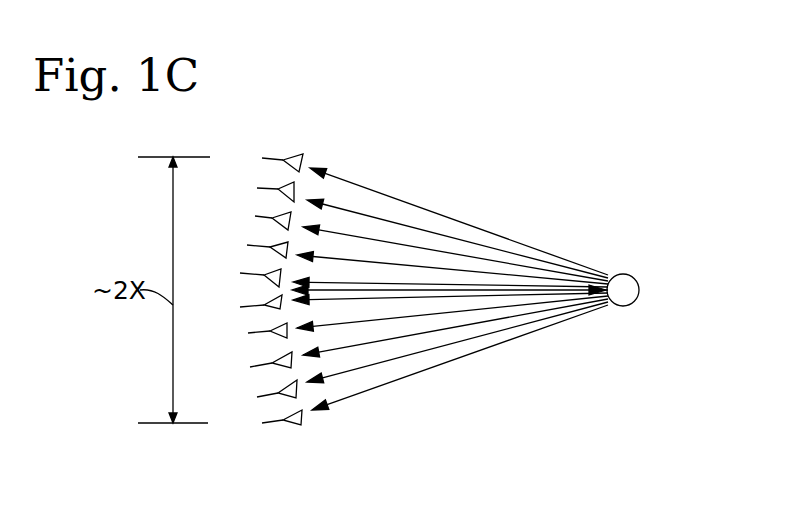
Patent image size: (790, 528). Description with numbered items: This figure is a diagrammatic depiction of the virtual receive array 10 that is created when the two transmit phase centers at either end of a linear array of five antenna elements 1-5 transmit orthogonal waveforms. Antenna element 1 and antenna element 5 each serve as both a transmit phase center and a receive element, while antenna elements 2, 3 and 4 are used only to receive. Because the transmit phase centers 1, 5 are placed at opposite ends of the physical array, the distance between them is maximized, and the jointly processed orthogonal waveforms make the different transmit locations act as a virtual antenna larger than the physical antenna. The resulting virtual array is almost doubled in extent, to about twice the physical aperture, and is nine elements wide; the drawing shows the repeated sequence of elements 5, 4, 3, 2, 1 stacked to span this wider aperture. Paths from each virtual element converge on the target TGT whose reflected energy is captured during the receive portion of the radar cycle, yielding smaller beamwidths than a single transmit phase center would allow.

The antenna element 1 is at (243, 273).
The antenna element 2 is at (248, 246).
The antenna element 3 is at (256, 216).
The antenna element 4 is at (257, 188).
The antenna element 5 is at (270, 158).
The detector array system 10 is at (609, 154).
The target TGT is at (618, 274).